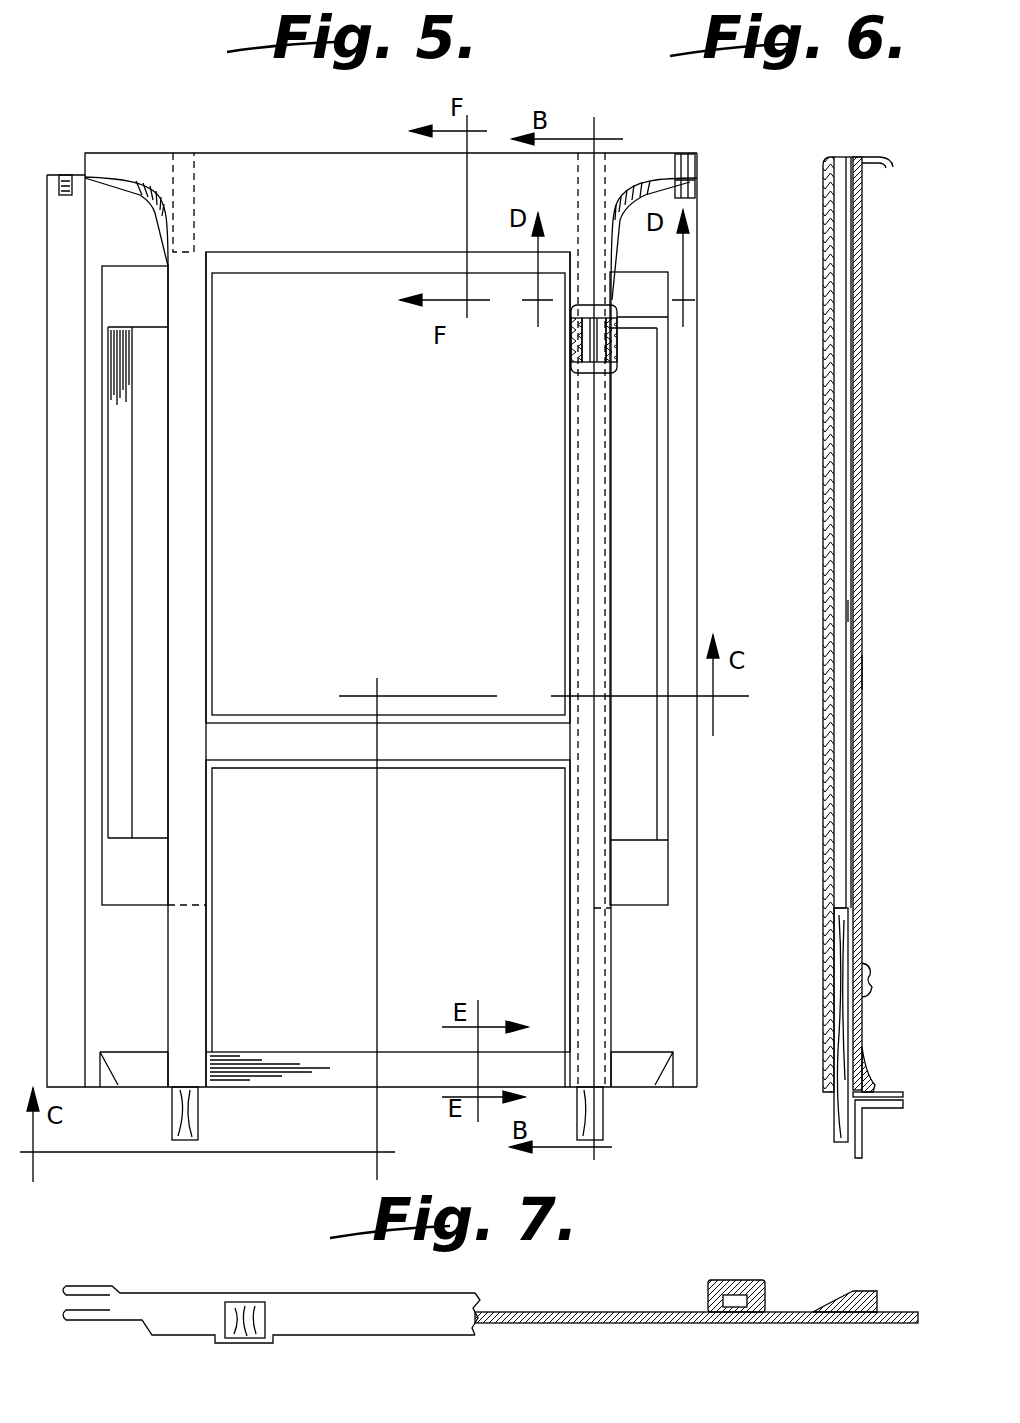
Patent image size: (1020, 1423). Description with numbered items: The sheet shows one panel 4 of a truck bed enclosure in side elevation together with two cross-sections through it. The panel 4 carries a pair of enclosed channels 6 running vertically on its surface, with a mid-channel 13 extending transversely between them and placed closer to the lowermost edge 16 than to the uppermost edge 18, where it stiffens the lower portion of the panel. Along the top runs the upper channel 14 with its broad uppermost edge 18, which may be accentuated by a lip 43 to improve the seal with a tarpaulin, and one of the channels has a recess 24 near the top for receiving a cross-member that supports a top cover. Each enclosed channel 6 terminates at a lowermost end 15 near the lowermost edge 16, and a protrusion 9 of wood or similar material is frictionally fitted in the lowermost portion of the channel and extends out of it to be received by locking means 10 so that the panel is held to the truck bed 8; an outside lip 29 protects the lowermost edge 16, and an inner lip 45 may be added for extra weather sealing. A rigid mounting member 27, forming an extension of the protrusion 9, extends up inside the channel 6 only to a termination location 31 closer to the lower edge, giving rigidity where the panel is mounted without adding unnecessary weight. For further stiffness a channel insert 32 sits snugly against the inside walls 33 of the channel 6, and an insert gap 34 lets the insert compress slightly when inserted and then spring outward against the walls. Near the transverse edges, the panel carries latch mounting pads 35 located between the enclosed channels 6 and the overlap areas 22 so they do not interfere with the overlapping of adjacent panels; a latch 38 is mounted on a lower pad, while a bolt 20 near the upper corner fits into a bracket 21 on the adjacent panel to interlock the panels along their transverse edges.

In FIG. 5, the panel 4 is at (415, 472).
In FIG. 5, the enclosed channel 6 is at (197, 625).
In FIG. 6, the enclosed channel 6 is at (862, 873).
In FIG. 7, the enclosed channel 6 is at (747, 1282).
In FIG. 6, the truck bed 8 is at (860, 1155).
In FIG. 5, the protrusion 9 is at (172, 1118).
In FIG. 6, the protrusion 9 is at (848, 1122).
In FIG. 7, the protrusion 9 is at (265, 1318).
In FIG. 6, the locking means 10 is at (867, 968).
In FIG. 5, the mid-channel 13 is at (500, 754).
In FIG. 6, the mid-channel 13 is at (862, 753).
In FIG. 5, the upper channel 14 is at (383, 179).
In FIG. 5, the lowermost end 15 is at (200, 1093).
In FIG. 6, the lowermost end 15 is at (823, 1093).
In FIG. 5, the lowermost edge 16 is at (288, 1080).
In FIG. 5, the uppermost edge 18 is at (107, 153).
In FIG. 6, the uppermost edge 18 is at (853, 157).
In FIG. 5, the bolt 20 is at (680, 192).
In FIG. 5, the bracket 21 is at (66, 172).
In FIG. 5, the overlap area 22 is at (683, 480).
In FIG. 5, the recess 24 is at (183, 162).
In FIG. 6, the recess 24 is at (840, 158).
In FIG. 5, the rigid mounting member 27 is at (602, 965).
In FIG. 6, the rigid mounting member 27 is at (837, 947).
In FIG. 5, the outside lip 29 is at (350, 1078).
In FIG. 5, the mounting member termination location 31 is at (182, 905).
In FIG. 5, the channel insert 32 is at (603, 373).
In FIG. 6, the channel insert 32 is at (850, 610).
In FIG. 7, the channel insert 32 is at (730, 1280).
In FIG. 5, the inside walls 33 is at (620, 316).
In FIG. 6, the inside walls 33 is at (862, 662).
In FIG. 7, the inside walls 33 is at (765, 1298).
In FIG. 5, the insert gap 34 is at (587, 330).
In FIG. 7, the insert gap 34 is at (737, 1312).
In FIG. 5, the latch mounting pad 35 is at (125, 282).
In FIG. 5, the latch 38 is at (118, 565).
In FIG. 6, the lip 43 is at (887, 181).
In FIG. 6, the inner lip 45 is at (870, 1085).